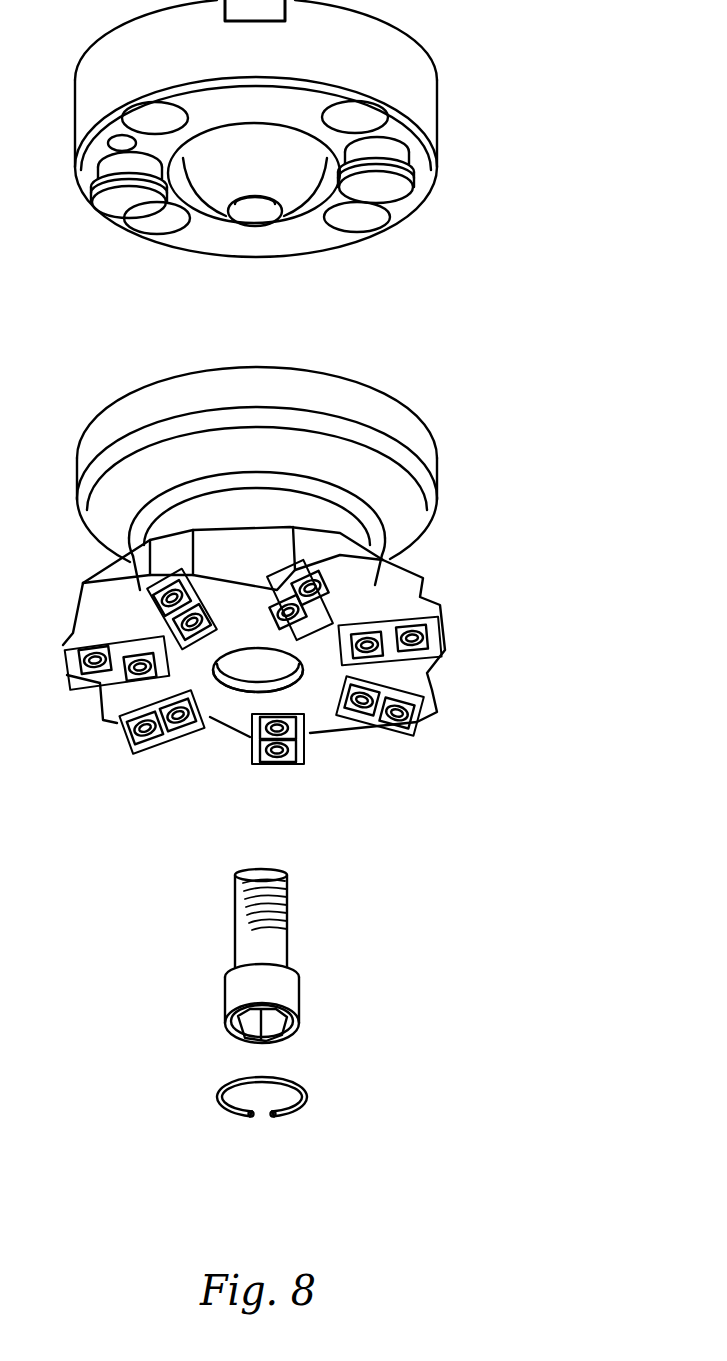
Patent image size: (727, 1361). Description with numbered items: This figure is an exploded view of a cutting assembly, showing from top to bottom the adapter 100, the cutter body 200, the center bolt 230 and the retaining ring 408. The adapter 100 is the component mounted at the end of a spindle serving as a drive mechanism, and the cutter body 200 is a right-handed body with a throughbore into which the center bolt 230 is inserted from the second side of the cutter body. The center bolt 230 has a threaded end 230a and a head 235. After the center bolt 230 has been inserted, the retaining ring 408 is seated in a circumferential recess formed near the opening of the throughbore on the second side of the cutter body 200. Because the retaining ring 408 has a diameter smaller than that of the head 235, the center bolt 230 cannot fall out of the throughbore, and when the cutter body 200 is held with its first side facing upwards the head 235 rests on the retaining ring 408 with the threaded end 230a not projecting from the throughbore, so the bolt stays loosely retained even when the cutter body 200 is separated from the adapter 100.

The adapter 100 is at (455, 110).
The cutter body 200 is at (457, 443).
The center bolt 230 is at (284, 951).
The threaded end 230a is at (268, 870).
The head 235 is at (253, 1030).
The retaining ring 408 is at (308, 1093).